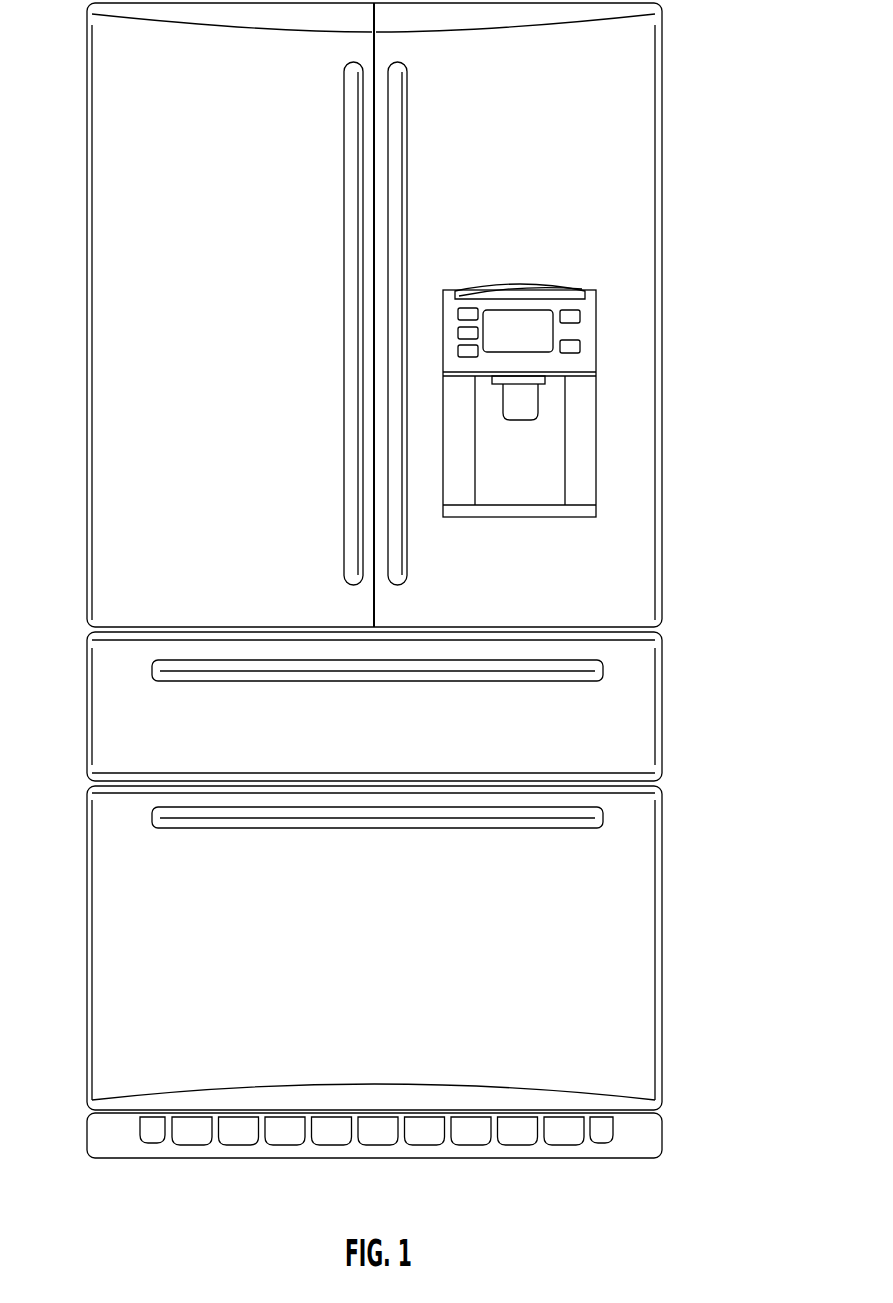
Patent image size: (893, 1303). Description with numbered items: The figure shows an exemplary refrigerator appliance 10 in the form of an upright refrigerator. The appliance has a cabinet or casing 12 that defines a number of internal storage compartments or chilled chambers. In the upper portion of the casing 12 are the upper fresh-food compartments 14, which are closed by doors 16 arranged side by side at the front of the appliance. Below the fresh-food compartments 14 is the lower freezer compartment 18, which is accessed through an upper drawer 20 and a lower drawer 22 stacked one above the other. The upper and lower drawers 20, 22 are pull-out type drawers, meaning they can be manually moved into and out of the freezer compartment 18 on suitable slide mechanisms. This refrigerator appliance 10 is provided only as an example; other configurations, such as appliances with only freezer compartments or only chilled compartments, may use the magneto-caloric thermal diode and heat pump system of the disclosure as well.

The refrigerator appliance 10 is at (690, 172).
The cabinet or casing 12 is at (662, 538).
The upper fresh-food compartments 14 is at (126, 225).
The doors 16 is at (264, 535).
The lower freezer compartment 18 is at (615, 731).
The upper drawer 20 is at (208, 731).
The lower drawer 22 is at (498, 1027).